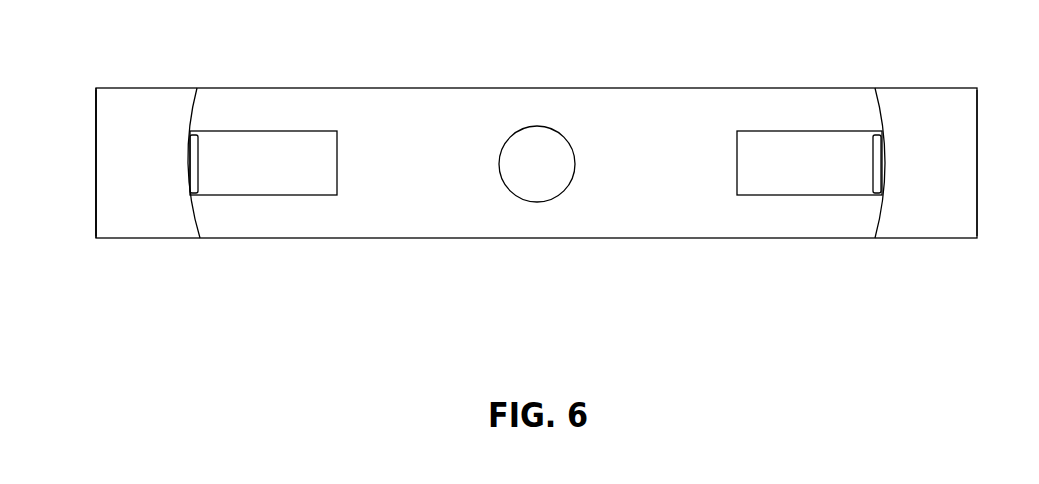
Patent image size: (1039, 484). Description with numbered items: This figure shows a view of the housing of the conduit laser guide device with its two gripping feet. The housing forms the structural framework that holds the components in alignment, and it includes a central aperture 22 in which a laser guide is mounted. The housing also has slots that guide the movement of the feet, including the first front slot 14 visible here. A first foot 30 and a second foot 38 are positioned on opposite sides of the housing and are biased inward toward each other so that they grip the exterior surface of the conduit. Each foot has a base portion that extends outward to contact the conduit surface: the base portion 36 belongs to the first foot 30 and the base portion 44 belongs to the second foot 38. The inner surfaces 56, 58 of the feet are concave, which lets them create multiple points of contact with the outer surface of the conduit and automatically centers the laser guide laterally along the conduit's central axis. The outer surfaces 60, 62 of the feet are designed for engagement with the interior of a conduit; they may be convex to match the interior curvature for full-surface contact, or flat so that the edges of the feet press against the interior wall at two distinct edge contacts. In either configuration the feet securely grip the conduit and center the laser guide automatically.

The first front slot 14 is at (762, 158).
The central aperture 22 is at (533, 150).
The first foot 30 is at (939, 256).
The base portion 36 is at (878, 163).
The second foot 38 is at (133, 256).
The base portion 44 is at (197, 163).
The inner surface 56 is at (877, 108).
The inner surface 58 is at (196, 110).
The outer surface 60 is at (977, 108).
The outer surface 62 is at (96, 108).